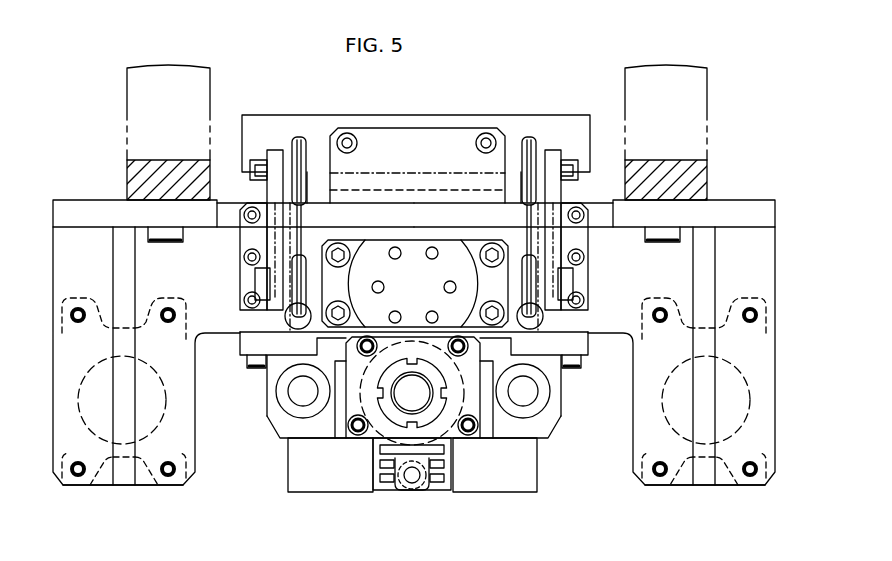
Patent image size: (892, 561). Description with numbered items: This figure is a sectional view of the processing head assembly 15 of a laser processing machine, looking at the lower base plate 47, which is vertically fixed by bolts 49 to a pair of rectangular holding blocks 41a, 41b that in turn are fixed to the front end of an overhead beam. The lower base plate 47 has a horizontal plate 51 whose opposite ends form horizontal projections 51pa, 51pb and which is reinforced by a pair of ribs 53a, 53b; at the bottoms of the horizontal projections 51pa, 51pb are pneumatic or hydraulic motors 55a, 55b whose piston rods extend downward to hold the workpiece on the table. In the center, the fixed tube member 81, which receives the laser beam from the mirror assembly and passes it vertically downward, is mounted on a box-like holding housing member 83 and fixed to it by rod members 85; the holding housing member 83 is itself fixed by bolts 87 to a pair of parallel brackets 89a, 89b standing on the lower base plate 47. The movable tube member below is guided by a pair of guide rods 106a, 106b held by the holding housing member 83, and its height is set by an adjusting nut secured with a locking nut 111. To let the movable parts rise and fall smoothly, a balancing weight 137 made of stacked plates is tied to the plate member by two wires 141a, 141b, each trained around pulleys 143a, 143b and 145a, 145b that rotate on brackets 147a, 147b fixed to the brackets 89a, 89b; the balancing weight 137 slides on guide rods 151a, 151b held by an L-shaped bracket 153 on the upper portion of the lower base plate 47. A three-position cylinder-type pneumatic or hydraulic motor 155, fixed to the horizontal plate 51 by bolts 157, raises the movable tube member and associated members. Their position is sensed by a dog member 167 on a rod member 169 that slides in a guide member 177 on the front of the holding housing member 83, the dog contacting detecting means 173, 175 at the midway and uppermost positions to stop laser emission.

The processing head assembly 15 is at (262, 456).
The holding block 41a is at (702, 172).
The holding block 41b is at (131, 182).
The lower base plate 47 is at (90, 207).
The bolts 49 is at (698, 210).
The horizontal plate 51 is at (55, 281).
The horizontal projection 51pa is at (733, 488).
The horizontal projection 51pb is at (104, 478).
The rib 53a is at (716, 256).
The rib 53b is at (118, 263).
The pneumatic or hydraulic motor 55a is at (746, 376).
The pneumatic or hydraulic motor 55b is at (78, 375).
The fixed tube member 81 is at (413, 390).
The holding housing member 83 is at (272, 424).
The rod members 85 is at (352, 429).
The bolts 87 is at (250, 365).
The bracket 89a is at (586, 333).
The bracket 89b is at (248, 320).
The guide rod 106a is at (530, 395).
The guide rod 106b is at (302, 391).
The locking nut 111 is at (547, 428).
The balancing weight 137 is at (329, 123).
The wire 141a is at (530, 217).
The wire 141b is at (300, 217).
The pulley 143a is at (536, 260).
The pulley 143b is at (294, 260).
The pulley 145a is at (528, 137).
The pulley 145b is at (298, 137).
The bracket 147a is at (552, 152).
The bracket 147b is at (280, 158).
The guide rod 151a is at (486, 132).
The guide rod 151b is at (353, 134).
The L-shaped bracket 153 is at (450, 130).
The pneumatic or hydraulic motor 155 is at (432, 295).
The bolts 157 is at (325, 317).
The dog member 167 is at (416, 484).
The rod member 169 is at (407, 481).
The detecting means 173 is at (510, 487).
The detecting means 175 is at (313, 485).
The guide member 177 is at (446, 454).